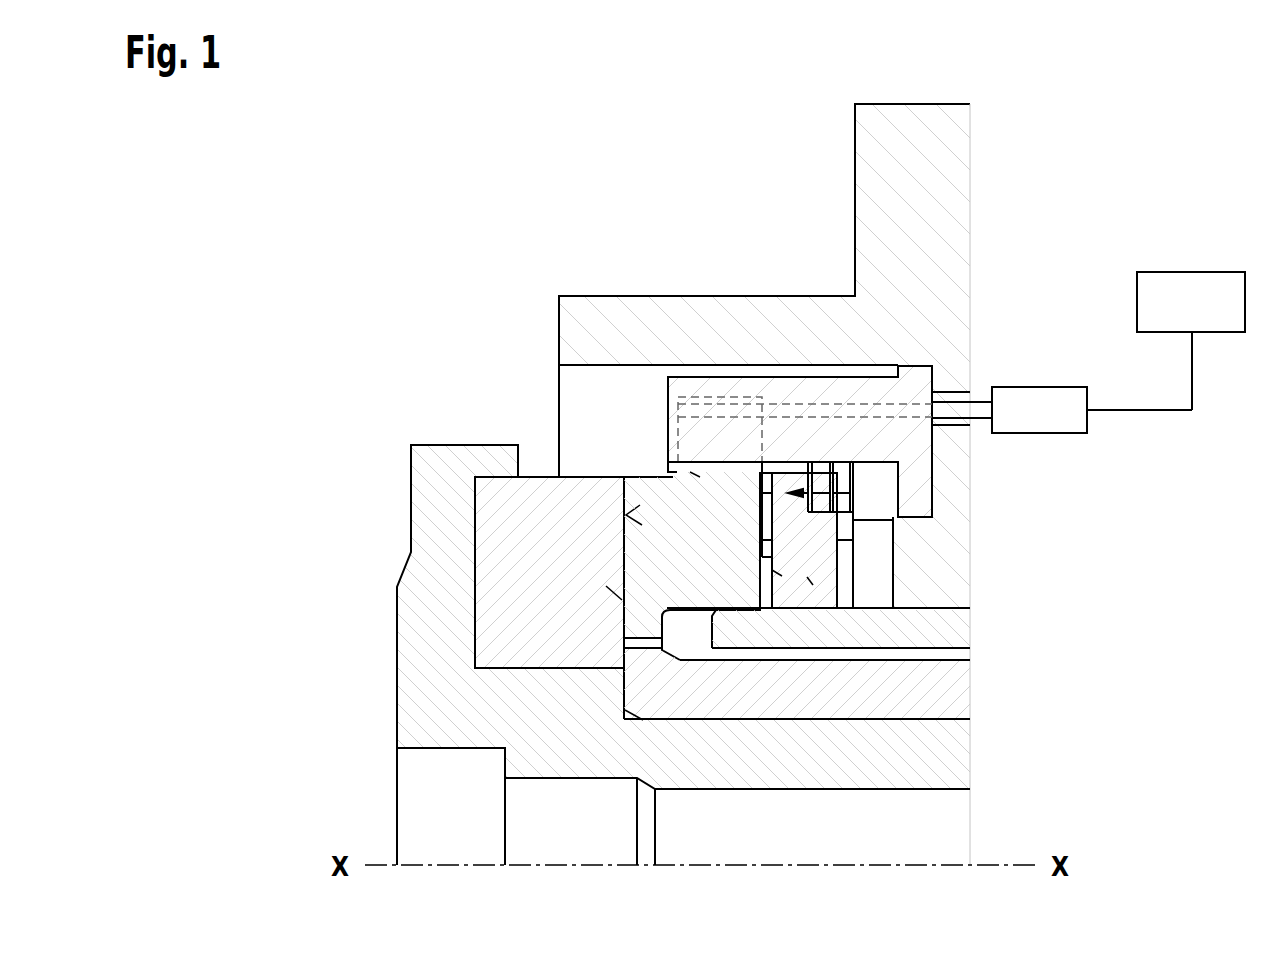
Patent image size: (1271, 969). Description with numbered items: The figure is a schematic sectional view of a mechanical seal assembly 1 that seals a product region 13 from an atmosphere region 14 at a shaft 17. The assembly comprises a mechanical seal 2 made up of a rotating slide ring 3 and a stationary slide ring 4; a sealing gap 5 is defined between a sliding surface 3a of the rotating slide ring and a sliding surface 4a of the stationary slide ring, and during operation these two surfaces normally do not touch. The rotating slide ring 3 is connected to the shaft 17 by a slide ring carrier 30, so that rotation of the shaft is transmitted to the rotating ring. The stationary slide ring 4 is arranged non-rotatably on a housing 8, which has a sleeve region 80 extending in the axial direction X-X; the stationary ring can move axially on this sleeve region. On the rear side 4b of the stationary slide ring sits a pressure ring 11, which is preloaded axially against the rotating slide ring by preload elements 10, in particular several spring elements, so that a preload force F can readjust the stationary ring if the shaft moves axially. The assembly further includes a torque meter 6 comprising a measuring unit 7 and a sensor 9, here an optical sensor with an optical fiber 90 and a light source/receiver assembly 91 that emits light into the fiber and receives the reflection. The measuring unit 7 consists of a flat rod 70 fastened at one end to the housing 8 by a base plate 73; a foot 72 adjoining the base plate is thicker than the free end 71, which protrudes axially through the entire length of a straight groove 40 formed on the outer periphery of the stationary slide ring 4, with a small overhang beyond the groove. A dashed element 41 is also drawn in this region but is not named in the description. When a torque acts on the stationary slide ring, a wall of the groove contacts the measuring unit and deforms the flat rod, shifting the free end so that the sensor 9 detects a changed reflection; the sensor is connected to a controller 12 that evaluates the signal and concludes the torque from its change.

The mechanical seal assembly 1 is at (523, 218).
The mechanical seal 2 is at (610, 462).
The rotating slide ring 3 is at (538, 619).
The sliding surface of the rotating slide ring 3a is at (628, 522).
The stationary slide ring 4 is at (698, 582).
The sliding surface of the stationary slide ring 4a is at (622, 600).
The rear side of the stationary slide ring 4b is at (830, 512).
The sealing gap 5 is at (624, 548).
The torque meter 6 is at (717, 344).
The measuring unit 7 is at (808, 346).
The housing 8 is at (940, 245).
The sensor 9 is at (990, 377).
The preload elements 10 is at (772, 570).
The pressure ring 11 is at (807, 578).
The controller 12 is at (1192, 272).
The product region 13 is at (488, 417).
The atmosphere region 14 is at (960, 652).
The shaft 17 is at (925, 825).
The slide ring carrier 30 is at (440, 587).
The groove 40 is at (675, 388).
The coil 41 is at (712, 397).
The flat rod 70 is at (738, 374).
The free end 71 is at (695, 472).
The foot 72 is at (873, 395).
The base plate 73 is at (922, 383).
The sleeve region 80 is at (775, 623).
The optical fiber 90 is at (945, 410).
The light source/receiver assembly 91 is at (1037, 433).
The preload force F is at (803, 470).